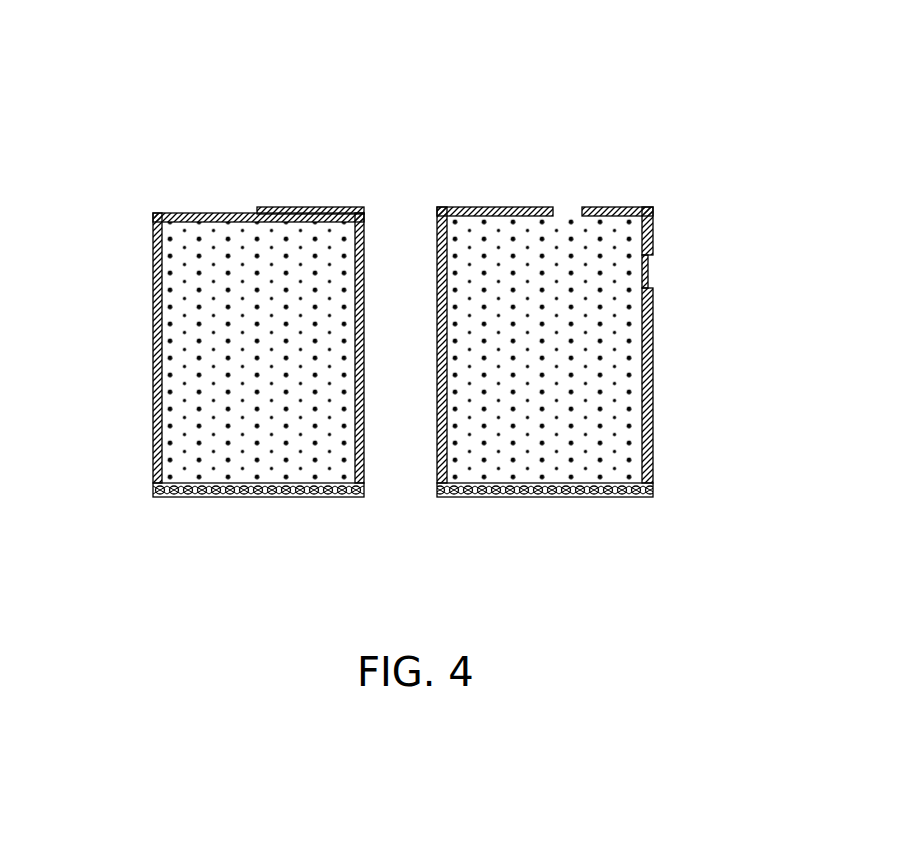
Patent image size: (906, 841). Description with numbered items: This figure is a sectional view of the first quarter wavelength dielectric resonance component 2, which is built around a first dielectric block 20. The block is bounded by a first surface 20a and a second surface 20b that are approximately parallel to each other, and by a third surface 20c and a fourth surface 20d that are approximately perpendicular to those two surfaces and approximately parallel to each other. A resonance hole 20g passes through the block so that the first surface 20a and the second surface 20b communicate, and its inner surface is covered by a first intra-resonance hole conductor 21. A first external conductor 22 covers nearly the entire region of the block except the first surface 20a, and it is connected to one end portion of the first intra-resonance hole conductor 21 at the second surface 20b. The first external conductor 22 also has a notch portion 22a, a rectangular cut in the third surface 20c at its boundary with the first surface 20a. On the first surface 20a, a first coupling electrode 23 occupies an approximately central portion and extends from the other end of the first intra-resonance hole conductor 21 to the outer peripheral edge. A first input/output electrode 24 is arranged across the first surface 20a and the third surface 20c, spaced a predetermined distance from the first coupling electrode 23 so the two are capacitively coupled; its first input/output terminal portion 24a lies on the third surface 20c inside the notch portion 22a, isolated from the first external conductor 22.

The first ¼ wavelength dielectric resonance component 2 is at (472, 131).
The first dielectric block 20 is at (601, 352).
The first surface 20a is at (186, 213).
The second surface 20b is at (280, 497).
The third surface 20c is at (655, 445).
The fourth surface 20d is at (153, 430).
The resonance hole 20g is at (388, 233).
The first intra-resonance hole conductor 21 is at (440, 427).
The first external conductor 22 is at (655, 370).
The notch portion 22a is at (657, 292).
The first coupling electrode 23 is at (276, 207).
The first input/output electrode 24 is at (620, 207).
The first input/output terminal portion 24a is at (655, 237).